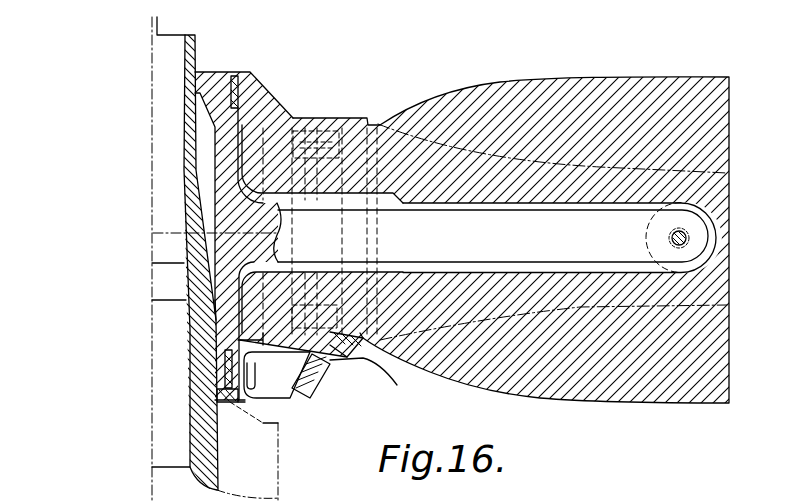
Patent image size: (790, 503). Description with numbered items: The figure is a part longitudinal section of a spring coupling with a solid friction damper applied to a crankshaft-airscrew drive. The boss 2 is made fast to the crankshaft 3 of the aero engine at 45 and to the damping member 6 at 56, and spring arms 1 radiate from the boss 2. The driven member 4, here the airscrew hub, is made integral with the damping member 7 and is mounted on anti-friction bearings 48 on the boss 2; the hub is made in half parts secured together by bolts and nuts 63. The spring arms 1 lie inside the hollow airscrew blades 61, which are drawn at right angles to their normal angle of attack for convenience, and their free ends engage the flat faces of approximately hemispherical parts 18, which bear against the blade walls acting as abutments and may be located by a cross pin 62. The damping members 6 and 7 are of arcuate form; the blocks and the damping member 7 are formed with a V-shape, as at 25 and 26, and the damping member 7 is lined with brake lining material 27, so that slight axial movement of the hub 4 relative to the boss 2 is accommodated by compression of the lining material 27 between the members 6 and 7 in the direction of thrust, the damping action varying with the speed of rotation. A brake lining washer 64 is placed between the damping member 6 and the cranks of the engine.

The spring arms 1 is at (449, 245).
The boss 2 is at (222, 137).
The driving member 3 is at (193, 427).
The driven member 4 is at (352, 118).
The damping member 6 is at (302, 390).
The damping member 7 is at (330, 372).
The hemispherical parts 18 is at (707, 257).
The V-shape 25 is at (300, 372).
The V-shape 26 is at (397, 385).
The brake lining material 27 is at (330, 385).
The fastening of boss to crankshaft 45 is at (214, 308).
The anti-friction bearings 48 is at (240, 82).
The fastening of boss to damping member 56 is at (240, 402).
The hollow airscrew blades 61 is at (515, 370).
The cross pin 62 is at (687, 236).
The bolts and nuts 63 is at (314, 165).
The brake lining washer 64 is at (225, 403).